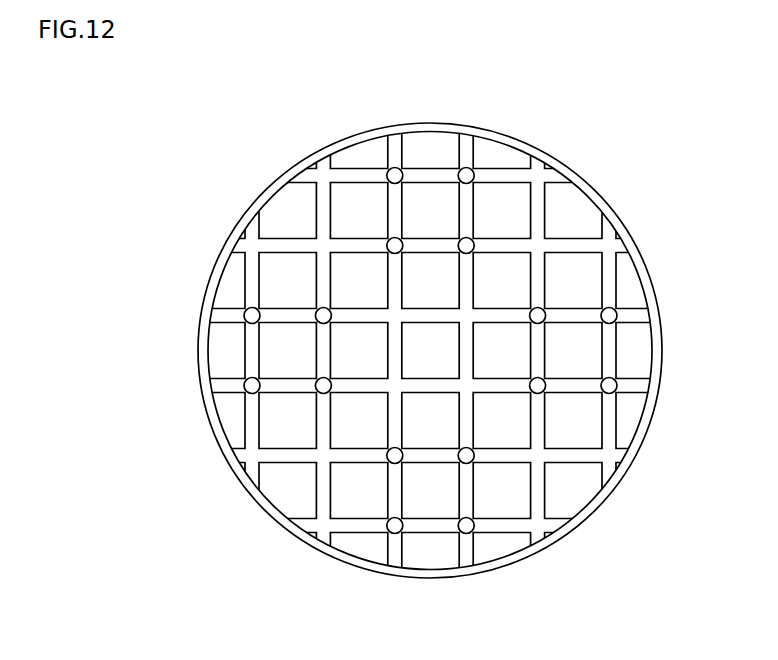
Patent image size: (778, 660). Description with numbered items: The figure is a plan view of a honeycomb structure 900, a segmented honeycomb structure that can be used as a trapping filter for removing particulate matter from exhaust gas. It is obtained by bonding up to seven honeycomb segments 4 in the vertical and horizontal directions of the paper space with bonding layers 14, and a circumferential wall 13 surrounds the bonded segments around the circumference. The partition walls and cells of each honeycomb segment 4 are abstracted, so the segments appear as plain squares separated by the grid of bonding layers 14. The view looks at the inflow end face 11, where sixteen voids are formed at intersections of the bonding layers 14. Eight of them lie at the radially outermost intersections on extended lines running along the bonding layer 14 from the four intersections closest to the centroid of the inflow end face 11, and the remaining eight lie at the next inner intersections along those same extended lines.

The honeycomb structure 900 is at (730, 90).
The inflow end face 11 is at (272, 150).
The circumferential wall 13 is at (587, 515).
The honeycomb segment 4 is at (577, 278).
The bonding layer 14 is at (293, 317).